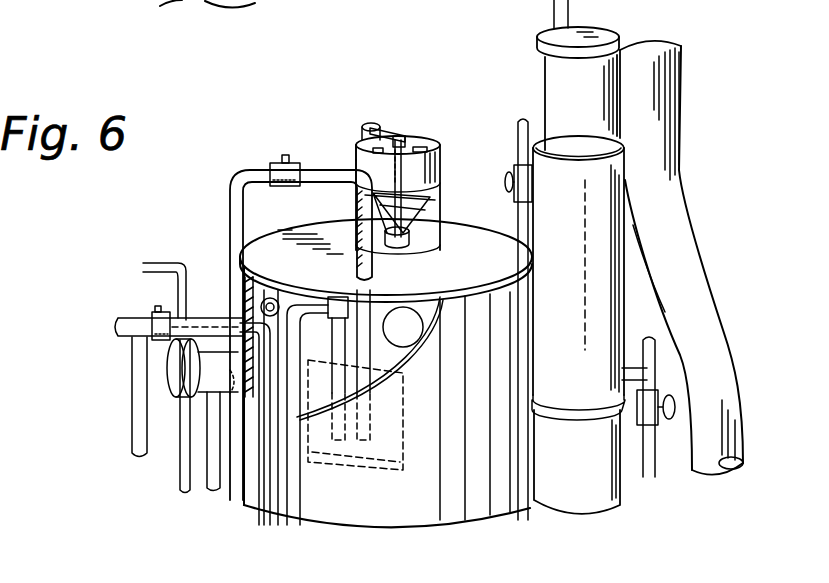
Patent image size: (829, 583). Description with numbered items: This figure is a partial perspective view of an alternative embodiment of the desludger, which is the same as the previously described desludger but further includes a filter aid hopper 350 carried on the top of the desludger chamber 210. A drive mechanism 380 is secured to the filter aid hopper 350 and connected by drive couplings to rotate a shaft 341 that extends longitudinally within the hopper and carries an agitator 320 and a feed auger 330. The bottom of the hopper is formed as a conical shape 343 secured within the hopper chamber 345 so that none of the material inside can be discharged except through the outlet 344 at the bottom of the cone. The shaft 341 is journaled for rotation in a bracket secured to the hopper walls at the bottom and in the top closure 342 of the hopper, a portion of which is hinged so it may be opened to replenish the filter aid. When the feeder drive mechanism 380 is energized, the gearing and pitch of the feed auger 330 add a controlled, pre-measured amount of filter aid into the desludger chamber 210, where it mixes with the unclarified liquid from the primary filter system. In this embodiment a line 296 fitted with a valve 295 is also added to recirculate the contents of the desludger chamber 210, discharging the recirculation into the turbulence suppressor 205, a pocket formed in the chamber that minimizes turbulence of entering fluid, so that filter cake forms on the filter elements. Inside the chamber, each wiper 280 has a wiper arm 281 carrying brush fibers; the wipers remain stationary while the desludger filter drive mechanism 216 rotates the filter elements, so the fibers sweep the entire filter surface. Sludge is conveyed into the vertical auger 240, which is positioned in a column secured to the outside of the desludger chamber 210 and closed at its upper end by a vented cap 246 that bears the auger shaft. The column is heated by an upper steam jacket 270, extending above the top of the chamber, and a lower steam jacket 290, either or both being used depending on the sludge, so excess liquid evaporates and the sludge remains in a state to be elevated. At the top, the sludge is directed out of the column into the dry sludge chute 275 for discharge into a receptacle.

The turbulence suppressor 205 is at (340, 474).
The desludger chamber 210 is at (503, 527).
The desludger filter drive mechanism 216 is at (173, 406).
The vertical auger 240 is at (626, 306).
The cap 246 is at (600, 28).
The upper steam jacket 270 is at (625, 233).
The dry sludge chute 275 is at (730, 224).
The wiper 280 is at (309, 26).
The wiper arm 281 is at (186, 1).
The lower steam jacket 290 is at (590, 508).
The valve 295 is at (285, 158).
The recirculation line 296 is at (229, 186).
The agitator 320 is at (410, 197).
The feed auger 330 is at (410, 238).
The shaft 341 is at (393, 130).
The top closure 342 is at (357, 140).
The conical shape 343 is at (430, 222).
The outlet 344 is at (383, 242).
The hopper chamber 345 is at (357, 162).
The filter aid hopper 350 is at (396, 181).
The drive mechanism 380 is at (377, 120).